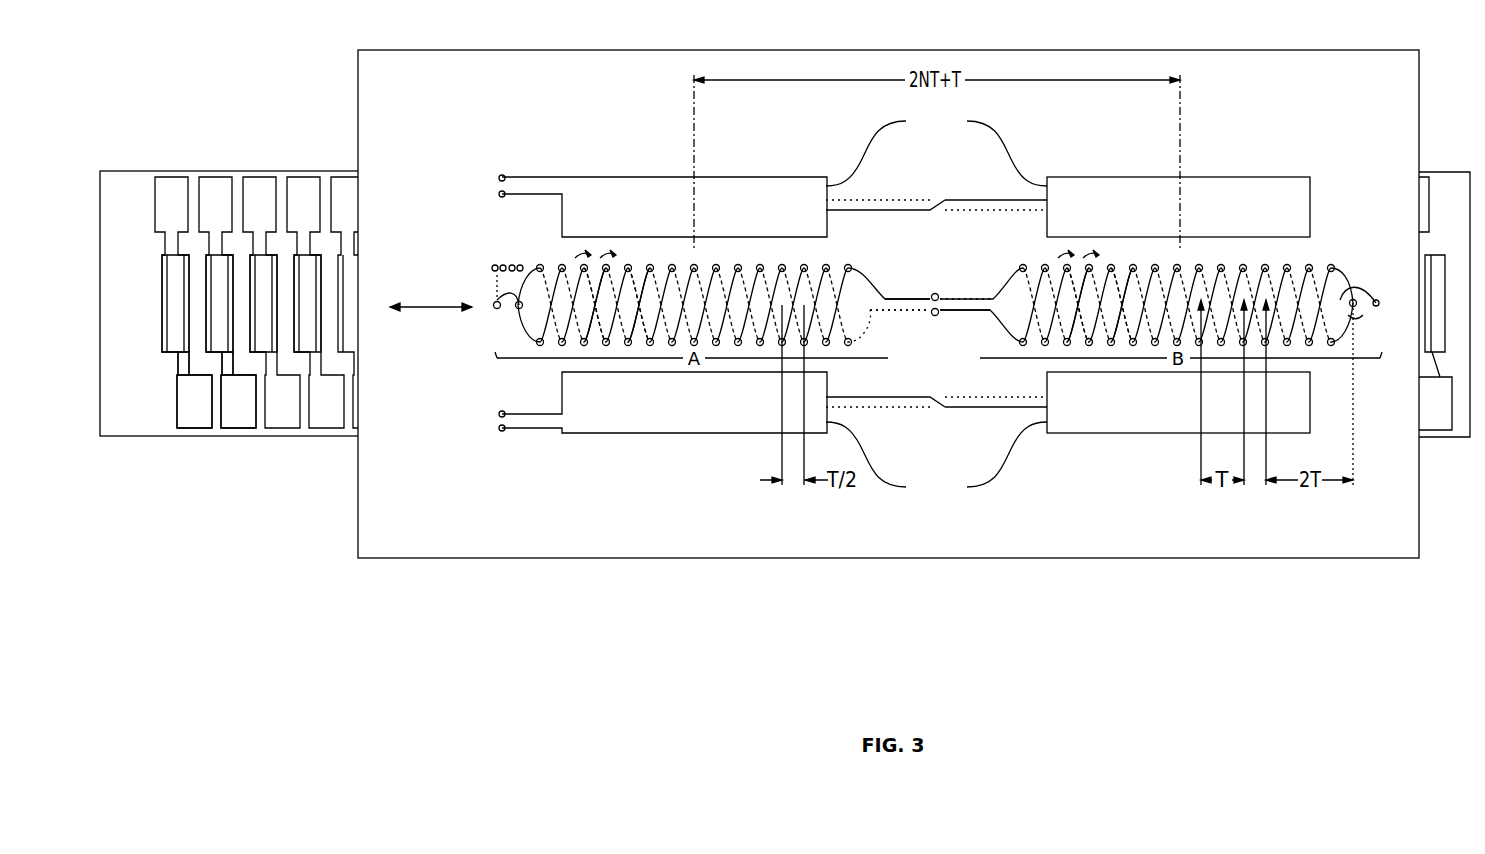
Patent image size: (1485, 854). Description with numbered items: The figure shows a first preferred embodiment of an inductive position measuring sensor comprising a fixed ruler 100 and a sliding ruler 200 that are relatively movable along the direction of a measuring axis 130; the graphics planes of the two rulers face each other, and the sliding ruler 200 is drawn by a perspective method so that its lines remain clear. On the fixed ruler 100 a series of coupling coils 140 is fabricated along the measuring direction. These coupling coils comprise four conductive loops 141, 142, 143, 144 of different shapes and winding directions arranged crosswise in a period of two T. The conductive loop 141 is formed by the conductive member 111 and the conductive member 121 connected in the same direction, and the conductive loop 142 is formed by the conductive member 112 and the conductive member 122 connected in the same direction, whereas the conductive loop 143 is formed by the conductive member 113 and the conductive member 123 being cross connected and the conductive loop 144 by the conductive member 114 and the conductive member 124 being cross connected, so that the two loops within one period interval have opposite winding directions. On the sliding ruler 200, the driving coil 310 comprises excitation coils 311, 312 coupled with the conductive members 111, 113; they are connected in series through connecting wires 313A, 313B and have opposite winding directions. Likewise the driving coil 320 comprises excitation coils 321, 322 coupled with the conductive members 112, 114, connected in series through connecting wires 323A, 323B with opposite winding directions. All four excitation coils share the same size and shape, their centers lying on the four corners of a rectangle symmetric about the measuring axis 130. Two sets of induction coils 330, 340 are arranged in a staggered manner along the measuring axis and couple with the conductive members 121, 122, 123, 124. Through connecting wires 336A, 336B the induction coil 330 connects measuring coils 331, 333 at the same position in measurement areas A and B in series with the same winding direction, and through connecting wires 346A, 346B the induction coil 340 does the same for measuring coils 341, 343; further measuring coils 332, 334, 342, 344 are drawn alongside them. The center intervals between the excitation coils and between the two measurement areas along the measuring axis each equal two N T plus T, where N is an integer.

The fixed ruler 100 is at (133, 435).
The conductive member 111 is at (172, 177).
The conductive member 112 is at (193, 355).
The conductive member 113 is at (215, 177).
The conductive member 114 is at (245, 355).
The conductive member 121 is at (176, 355).
The conductive member 122 is at (178, 247).
The conductive member 123 is at (223, 355).
The conductive member 124 is at (223, 247).
The measuring axis 130 is at (432, 296).
The coupling coils 140 is at (323, 342).
The conductive loop 141 is at (254, 267).
The conductive loop 142 is at (268, 280).
The conductive loop 143 is at (299, 267).
The conductive loop 144 is at (310, 280).
The sliding ruler 200 is at (405, 545).
The driving coil 310 is at (936, 150).
The excitation coil 311 is at (655, 190).
The excitation coil 312 is at (1213, 188).
The connecting wire 313A is at (868, 200).
The connecting wire 313B is at (957, 200).
The driving coil 320 is at (936, 463).
The excitation coil 321 is at (692, 420).
The excitation coil 322 is at (1175, 420).
The connecting wire 323A is at (868, 410).
The connecting wire 323B is at (957, 410).
The induction coil 330 is at (848, 258).
The measuring coil 331 is at (599, 345).
The measuring coil 332 is at (644, 345).
The measuring coil 333 is at (1085, 345).
The measuring coil 334 is at (1130, 345).
The connecting wire 336A is at (955, 299).
The connecting wire 336B is at (955, 312).
The induction coil 340 is at (888, 358).
The measuring coil 341 is at (581, 345).
The measuring coil 342 is at (627, 345).
The measuring coil 343 is at (1058, 345).
The measuring coil 344 is at (1105, 345).
The connecting wire 346A is at (908, 299).
The connecting wire 346B is at (908, 312).